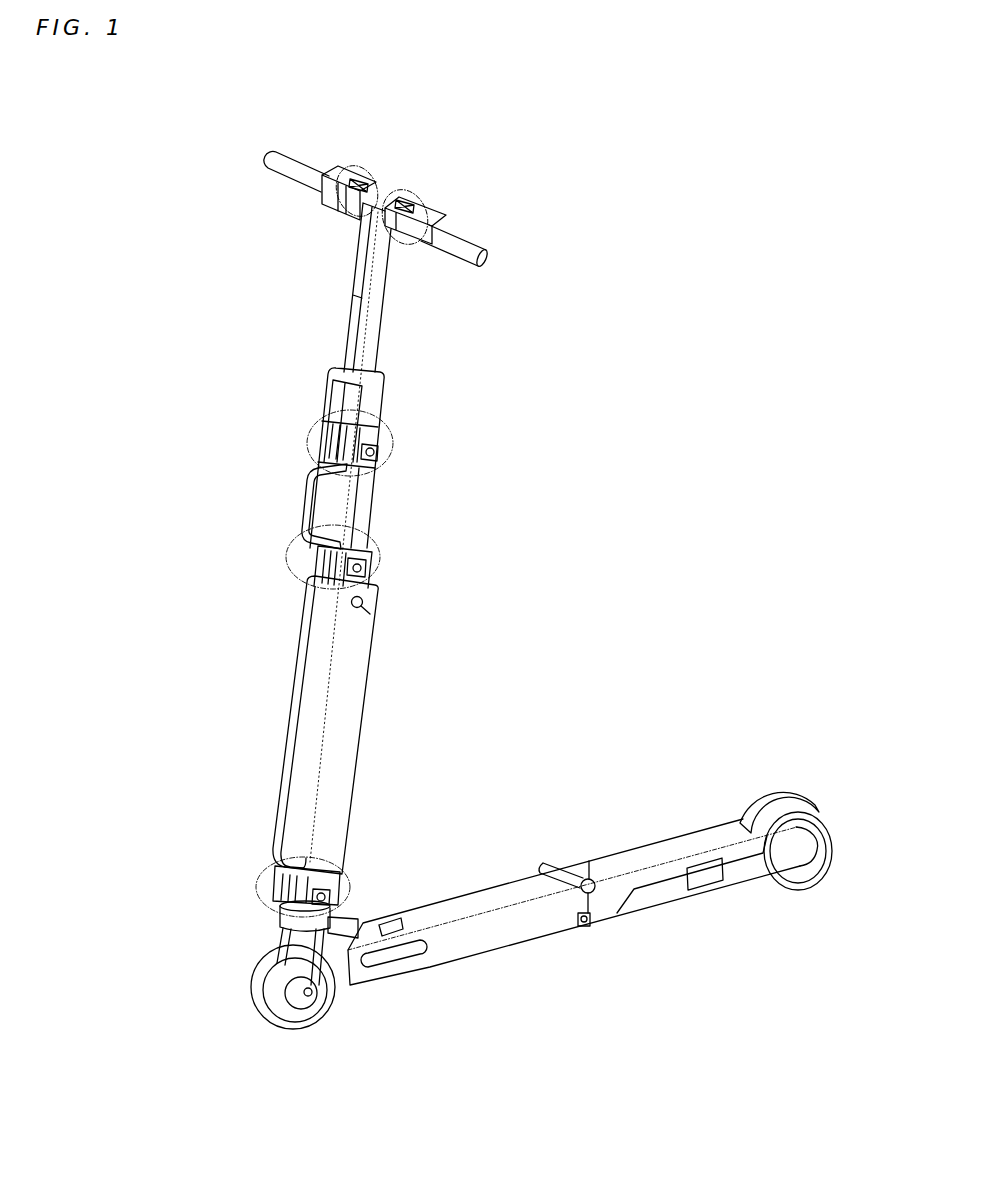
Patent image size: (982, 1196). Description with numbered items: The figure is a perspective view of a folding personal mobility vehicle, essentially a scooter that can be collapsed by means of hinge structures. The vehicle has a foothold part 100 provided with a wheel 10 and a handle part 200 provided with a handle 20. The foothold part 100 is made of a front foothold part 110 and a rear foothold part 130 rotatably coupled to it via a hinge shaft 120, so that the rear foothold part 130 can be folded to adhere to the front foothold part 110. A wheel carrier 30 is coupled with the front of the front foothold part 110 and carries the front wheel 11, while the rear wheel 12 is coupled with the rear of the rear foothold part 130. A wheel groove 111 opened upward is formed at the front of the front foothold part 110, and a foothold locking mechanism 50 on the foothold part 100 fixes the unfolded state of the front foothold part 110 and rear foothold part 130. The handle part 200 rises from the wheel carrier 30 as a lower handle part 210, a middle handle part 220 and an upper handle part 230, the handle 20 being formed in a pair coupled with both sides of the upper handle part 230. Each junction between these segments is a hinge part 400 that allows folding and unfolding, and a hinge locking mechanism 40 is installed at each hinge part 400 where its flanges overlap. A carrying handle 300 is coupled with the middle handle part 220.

The wheel 10 is at (237, 998).
The front wheel 11 is at (267, 1018).
The rear wheel 12 is at (795, 882).
The handle 20 is at (290, 158).
The wheel carrier 30 is at (283, 913).
The hinge locking mechanism 40 is at (384, 232).
The foothold locking mechanism 50 is at (586, 927).
The foothold part 100 is at (583, 919).
The front foothold part 110 is at (574, 923).
The wheel groove 111 is at (390, 929).
The hinge shaft 120 is at (588, 878).
The rear foothold part 130 is at (679, 895).
The handle part 200 is at (331, 612).
The lower handle part 210 is at (303, 717).
The middle handle part 220 is at (360, 505).
The upper handle part 230 is at (374, 310).
The carrying handle 300 is at (308, 512).
The hinge part 400 is at (410, 188).